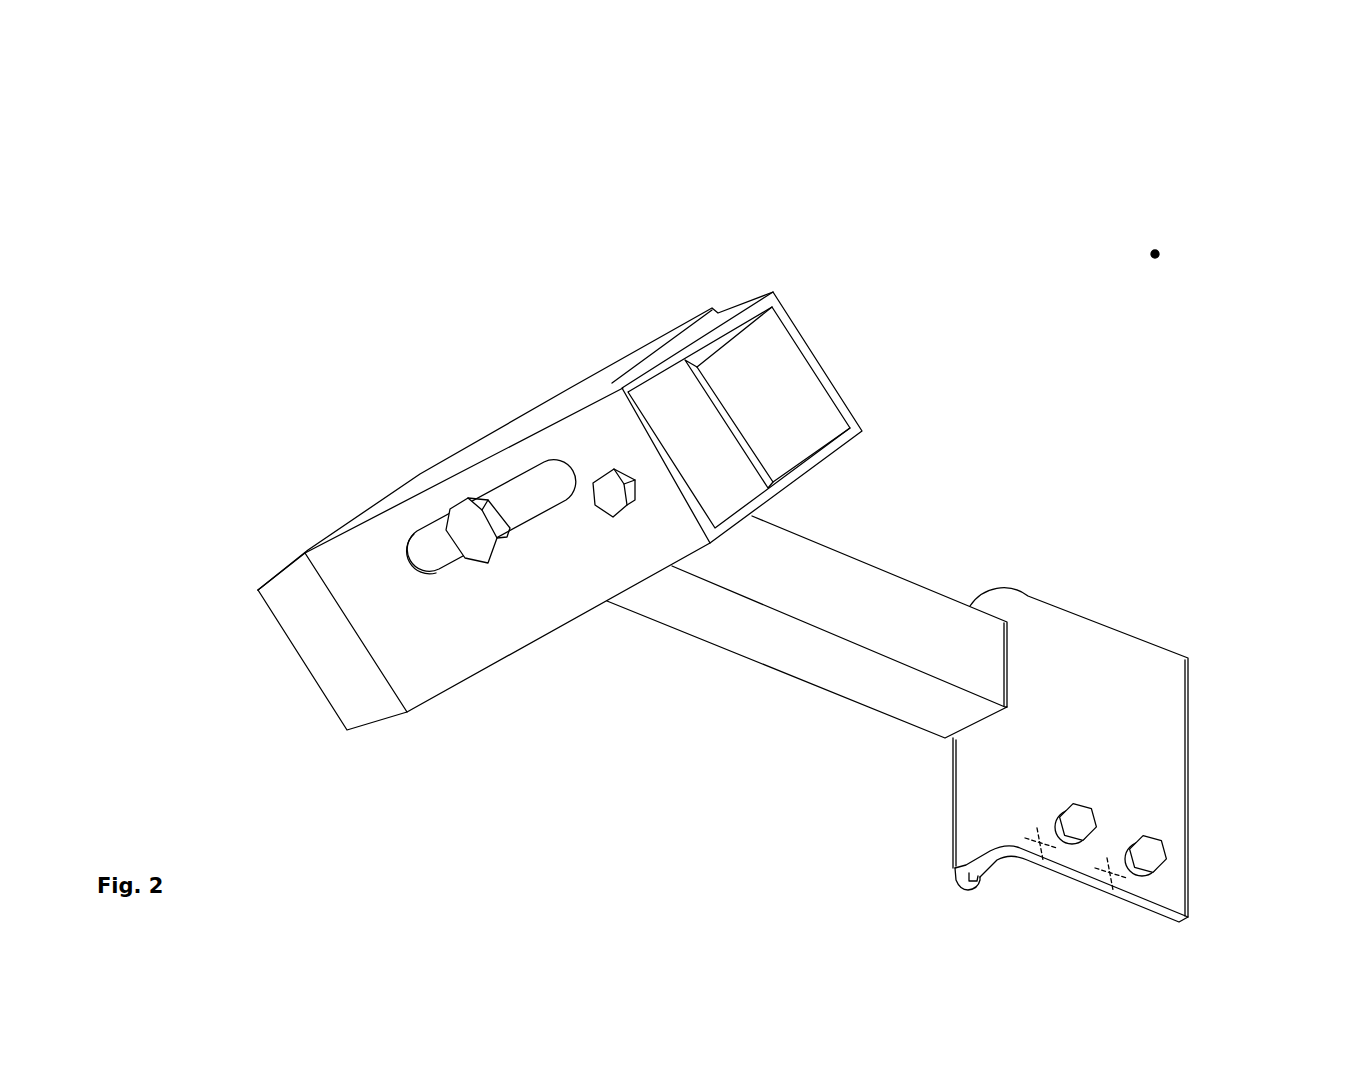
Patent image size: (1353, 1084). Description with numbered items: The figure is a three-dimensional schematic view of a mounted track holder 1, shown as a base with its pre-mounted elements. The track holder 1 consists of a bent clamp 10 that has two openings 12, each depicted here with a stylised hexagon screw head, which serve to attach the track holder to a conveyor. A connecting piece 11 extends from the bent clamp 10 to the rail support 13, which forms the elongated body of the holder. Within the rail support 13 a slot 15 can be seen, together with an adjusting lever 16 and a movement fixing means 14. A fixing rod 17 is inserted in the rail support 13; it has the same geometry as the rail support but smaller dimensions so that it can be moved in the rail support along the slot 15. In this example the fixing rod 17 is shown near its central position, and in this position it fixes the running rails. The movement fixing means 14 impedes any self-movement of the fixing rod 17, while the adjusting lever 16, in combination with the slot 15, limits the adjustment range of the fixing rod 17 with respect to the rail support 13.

The track holder 1 is at (1158, 251).
The bent clamp 10 is at (1059, 680).
The connecting piece 11 is at (843, 576).
The openings 12 is at (1081, 818).
The rail support 13 is at (525, 422).
The movement fixing means 14 is at (612, 489).
The slot 15 is at (433, 553).
The adjusting lever 16 is at (483, 528).
The fixing rod 17 is at (822, 443).